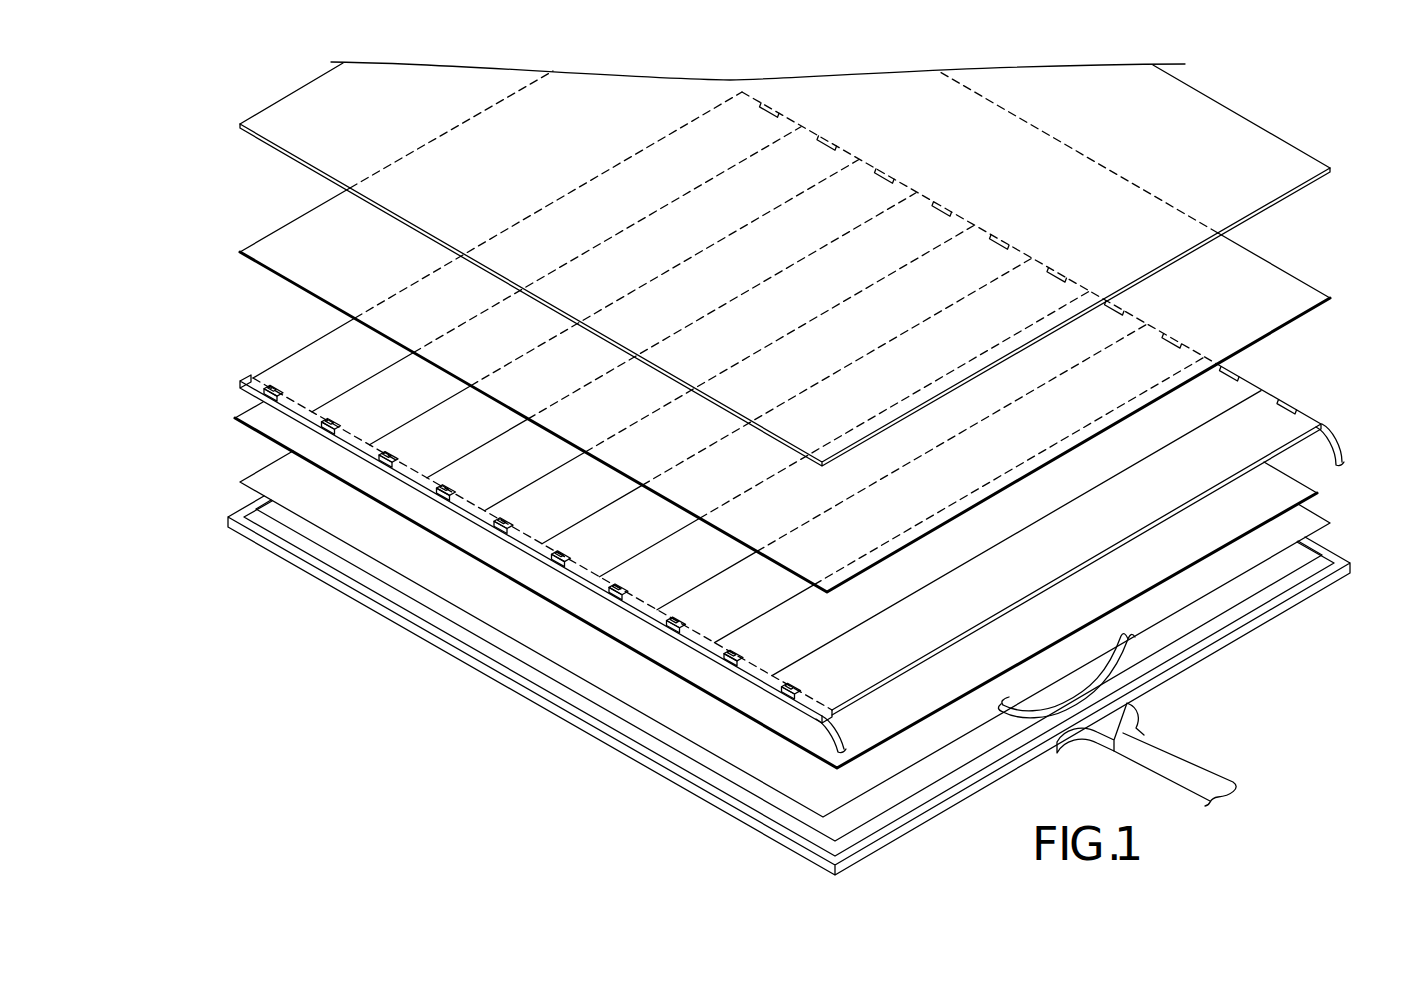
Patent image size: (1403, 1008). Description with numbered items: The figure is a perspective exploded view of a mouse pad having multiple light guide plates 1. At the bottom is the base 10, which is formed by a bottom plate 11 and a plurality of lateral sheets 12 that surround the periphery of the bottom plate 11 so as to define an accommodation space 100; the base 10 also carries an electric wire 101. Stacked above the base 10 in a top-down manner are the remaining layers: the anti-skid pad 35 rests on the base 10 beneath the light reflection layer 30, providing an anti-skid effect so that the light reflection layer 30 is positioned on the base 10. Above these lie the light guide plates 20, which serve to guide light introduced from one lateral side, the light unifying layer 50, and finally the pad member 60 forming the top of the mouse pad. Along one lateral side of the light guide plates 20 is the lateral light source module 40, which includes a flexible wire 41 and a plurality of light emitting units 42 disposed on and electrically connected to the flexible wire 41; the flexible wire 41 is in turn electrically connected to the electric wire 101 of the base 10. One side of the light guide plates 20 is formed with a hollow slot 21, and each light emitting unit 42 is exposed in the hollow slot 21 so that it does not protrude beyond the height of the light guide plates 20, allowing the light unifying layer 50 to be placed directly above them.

The mouse pad having multiple light guide plates 1 is at (1338, 116).
The base 10 is at (495, 757).
The bottom plate 11 is at (435, 612).
The lateral sheets 12 is at (522, 688).
The light guide plates 20 is at (330, 343).
The hollow slot 21 is at (258, 392).
The light reflection layer 30 is at (363, 482).
The anti-skid pad 35 is at (385, 545).
The lateral light source module 40 is at (218, 485).
The flexible wire 41 is at (303, 427).
The light emitting units 42 is at (268, 402).
The light unifying layer 50 is at (330, 228).
The pad member 60 is at (290, 108).
The accommodation space 100 is at (832, 827).
The electric wire 101 is at (1178, 770).